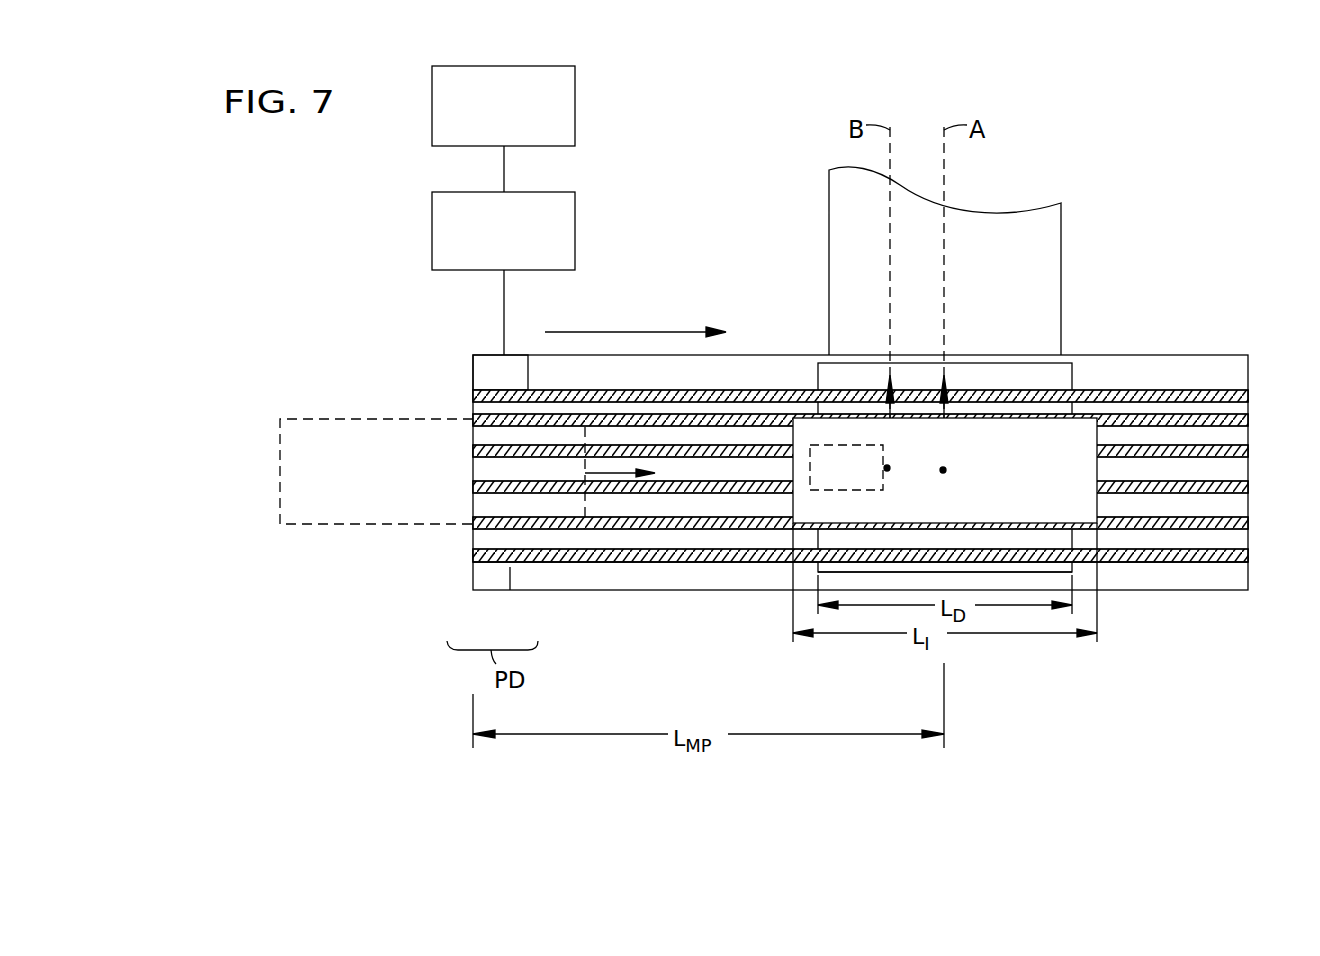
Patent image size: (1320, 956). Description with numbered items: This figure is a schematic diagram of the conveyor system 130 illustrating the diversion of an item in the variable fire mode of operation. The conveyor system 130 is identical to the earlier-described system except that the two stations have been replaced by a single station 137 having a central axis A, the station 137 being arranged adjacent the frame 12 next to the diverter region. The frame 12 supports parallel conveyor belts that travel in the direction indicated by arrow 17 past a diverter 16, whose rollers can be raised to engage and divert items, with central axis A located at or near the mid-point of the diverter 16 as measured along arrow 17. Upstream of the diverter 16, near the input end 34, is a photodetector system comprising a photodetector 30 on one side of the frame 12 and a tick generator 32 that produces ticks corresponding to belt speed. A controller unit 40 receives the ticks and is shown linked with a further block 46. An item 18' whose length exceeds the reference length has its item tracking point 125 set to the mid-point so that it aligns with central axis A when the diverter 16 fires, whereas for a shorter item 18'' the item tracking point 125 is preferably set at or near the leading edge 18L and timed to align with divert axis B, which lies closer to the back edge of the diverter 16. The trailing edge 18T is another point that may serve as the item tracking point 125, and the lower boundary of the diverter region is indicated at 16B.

The frame 12 is at (1220, 354).
The diverter 16 is at (1072, 377).
The bottom of print zone 16B is at (818, 568).
The arrow 17 is at (612, 332).
The item 18' is at (674, 446).
The item 18'' is at (846, 467).
The trailing edge 18T is at (808, 457).
The leading edge 18L is at (883, 485).
The photodetector 30 is at (473, 377).
The tick generator 32 is at (485, 590).
The input end 34 is at (473, 545).
The controller unit 40 is at (520, 241).
The processor/memory 46 is at (520, 113).
The item tracking point 125 is at (887, 468).
The conveyor system 130 is at (1115, 88).
The station 137 is at (1061, 219).